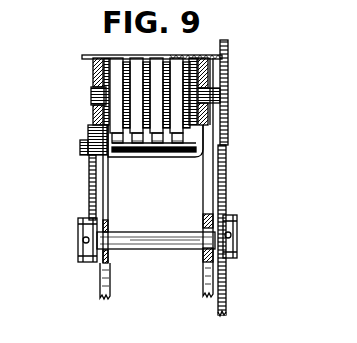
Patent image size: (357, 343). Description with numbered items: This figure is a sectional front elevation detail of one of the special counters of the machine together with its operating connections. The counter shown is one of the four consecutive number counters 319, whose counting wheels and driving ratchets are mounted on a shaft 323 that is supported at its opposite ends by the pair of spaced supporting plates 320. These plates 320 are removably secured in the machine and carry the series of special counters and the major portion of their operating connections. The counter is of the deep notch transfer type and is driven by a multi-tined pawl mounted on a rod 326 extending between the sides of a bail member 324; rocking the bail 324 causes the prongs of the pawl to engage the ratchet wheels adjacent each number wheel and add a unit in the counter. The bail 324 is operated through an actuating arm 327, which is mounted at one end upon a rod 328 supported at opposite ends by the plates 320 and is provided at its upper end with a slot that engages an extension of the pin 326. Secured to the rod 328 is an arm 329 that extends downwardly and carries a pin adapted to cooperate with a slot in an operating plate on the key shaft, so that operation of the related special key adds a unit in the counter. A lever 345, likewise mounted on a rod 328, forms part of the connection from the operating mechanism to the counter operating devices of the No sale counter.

The consecutive number counter 319 is at (168, 53).
The supporting plate 320 is at (203, 252).
The shaft 323 is at (91, 96).
The bail member 324 is at (137, 153).
The rod 326 is at (80, 148).
The actuating arm 327 is at (89, 173).
The rod 328 is at (137, 232).
The arm 329 is at (225, 297).
The lever 345 is at (229, 63).